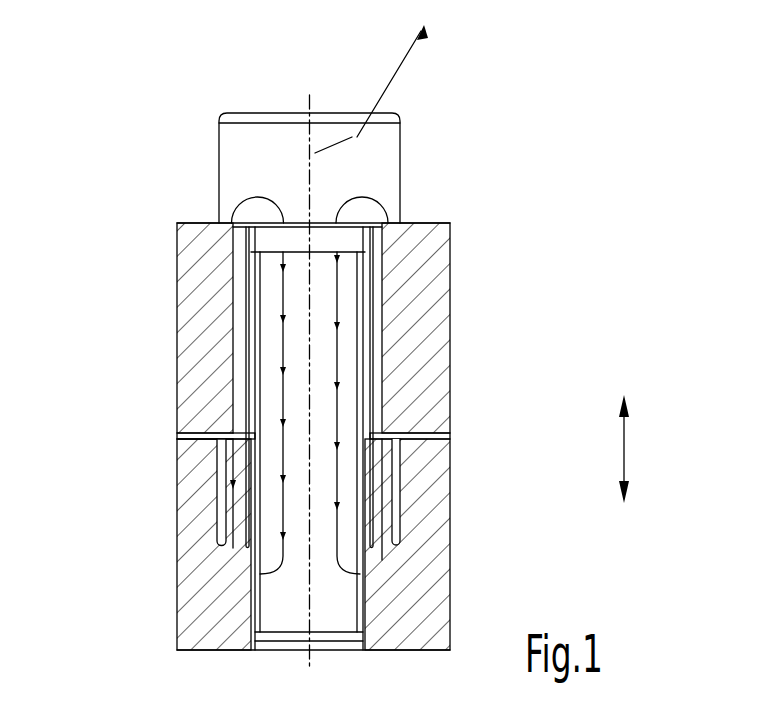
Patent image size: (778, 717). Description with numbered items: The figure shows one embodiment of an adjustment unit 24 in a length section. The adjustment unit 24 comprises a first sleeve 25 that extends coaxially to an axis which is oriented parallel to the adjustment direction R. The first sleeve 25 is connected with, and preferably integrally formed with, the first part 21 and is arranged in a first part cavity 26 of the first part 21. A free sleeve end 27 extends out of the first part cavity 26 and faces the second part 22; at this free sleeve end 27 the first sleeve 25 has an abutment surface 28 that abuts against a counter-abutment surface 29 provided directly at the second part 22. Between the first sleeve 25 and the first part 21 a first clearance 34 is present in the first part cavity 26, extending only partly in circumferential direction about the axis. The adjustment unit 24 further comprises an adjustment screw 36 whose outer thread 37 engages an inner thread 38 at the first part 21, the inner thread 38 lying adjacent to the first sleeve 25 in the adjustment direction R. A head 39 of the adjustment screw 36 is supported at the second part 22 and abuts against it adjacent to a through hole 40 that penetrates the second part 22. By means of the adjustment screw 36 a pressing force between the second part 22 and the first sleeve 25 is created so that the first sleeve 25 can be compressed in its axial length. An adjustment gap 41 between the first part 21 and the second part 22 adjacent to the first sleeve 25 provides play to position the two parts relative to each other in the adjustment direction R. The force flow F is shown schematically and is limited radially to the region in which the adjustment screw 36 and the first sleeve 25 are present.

The first part 21 is at (437, 552).
The second part 22 is at (438, 330).
The adjustment unit 24 is at (569, 115).
The first sleeve 25 is at (232, 472).
The first part cavity 26 is at (400, 503).
The free sleeve end 27 is at (212, 445).
The abutment surface 28 is at (235, 432).
The counter-abutment surface 29 is at (400, 459).
The first clearance 34 is at (252, 537).
The adjustment screw 36 is at (327, 308).
The outer thread 37 is at (262, 315).
The inner thread 38 is at (255, 598).
The head 39 is at (230, 167).
The through hole 40 is at (245, 243).
The adjustment gap 41 is at (450, 433).
The force flow F is at (283, 200).
The adjustment direction R is at (628, 447).